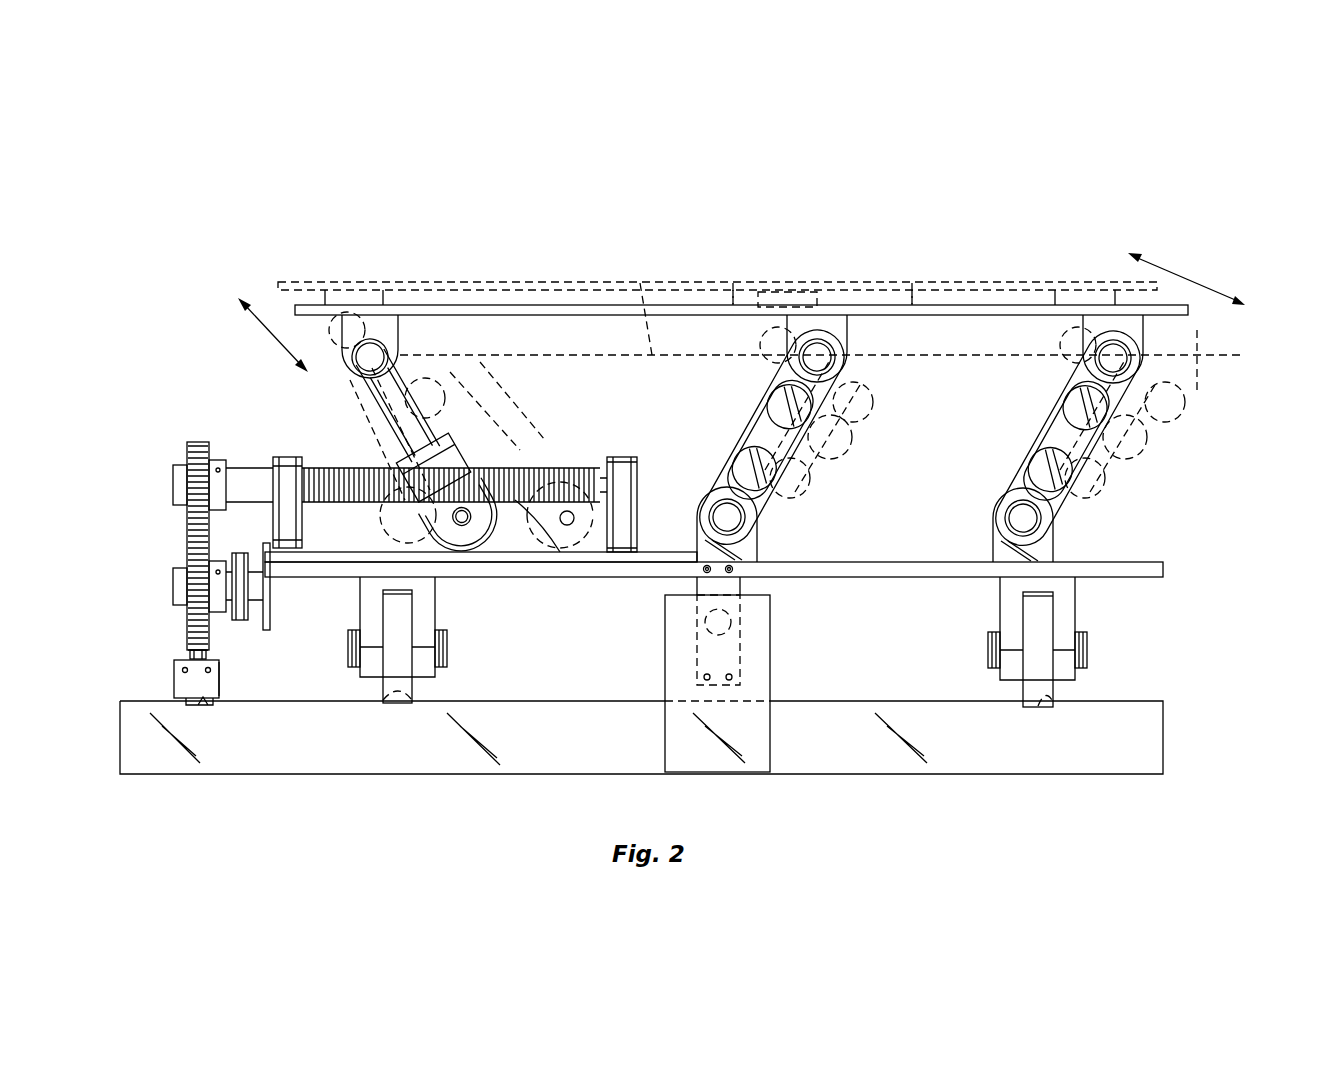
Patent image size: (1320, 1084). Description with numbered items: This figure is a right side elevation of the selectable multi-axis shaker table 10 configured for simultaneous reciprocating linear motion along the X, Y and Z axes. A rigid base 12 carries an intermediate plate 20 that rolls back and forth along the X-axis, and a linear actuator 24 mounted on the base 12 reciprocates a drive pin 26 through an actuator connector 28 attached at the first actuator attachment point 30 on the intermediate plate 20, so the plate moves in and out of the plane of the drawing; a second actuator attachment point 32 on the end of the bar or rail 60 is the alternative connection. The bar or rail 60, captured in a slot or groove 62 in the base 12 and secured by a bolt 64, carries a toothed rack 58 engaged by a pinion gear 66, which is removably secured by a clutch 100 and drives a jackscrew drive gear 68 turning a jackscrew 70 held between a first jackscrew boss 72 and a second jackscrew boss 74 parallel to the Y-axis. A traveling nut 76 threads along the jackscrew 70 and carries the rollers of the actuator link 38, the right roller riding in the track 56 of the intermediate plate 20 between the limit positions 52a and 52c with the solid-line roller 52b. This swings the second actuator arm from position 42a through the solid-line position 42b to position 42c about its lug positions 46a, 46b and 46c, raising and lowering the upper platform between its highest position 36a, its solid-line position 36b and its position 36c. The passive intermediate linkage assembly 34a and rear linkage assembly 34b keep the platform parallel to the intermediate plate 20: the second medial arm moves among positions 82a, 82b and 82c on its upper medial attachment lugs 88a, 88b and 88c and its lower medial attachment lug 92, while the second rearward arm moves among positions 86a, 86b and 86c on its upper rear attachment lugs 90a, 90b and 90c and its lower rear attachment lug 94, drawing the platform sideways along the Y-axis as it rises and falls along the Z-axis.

The shaker table 10 is at (248, 150).
The base 12 is at (1030, 752).
The intermediate plate 20 is at (1128, 577).
The linear actuator 24 is at (665, 735).
The drive pin 26 is at (700, 632).
The actuator connector 28 is at (697, 587).
The first actuator attachment point 30 is at (740, 568).
The second actuator attachment point 32 is at (178, 676).
The intermediate linkage assembly 34a is at (845, 500).
The rear linkage assembly 34b is at (1175, 486).
The upper platform highest position 36a is at (575, 270).
The upper platform solid-line position 36b is at (615, 300).
The upper platform third position 36c is at (648, 340).
The actuator link 38 is at (228, 396).
The second actuator arm first position 42a is at (350, 395).
The second actuator arm 42b is at (402, 350).
The second actuator arm third position 42c is at (470, 400).
The actuator arm lug first position 46a is at (330, 332).
The actuator arm lug 46b is at (402, 330).
The actuator arm lug third position 46c is at (497, 356).
The roller first position 52a is at (395, 525).
The roller 52b is at (475, 560).
The roller third position 52c is at (540, 560).
The track or slot 56 is at (590, 545).
The toothed rack 58 is at (187, 652).
The bar or rail 60 is at (219, 676).
The slot or groove 62 is at (205, 702).
The bolt 64 is at (209, 656).
The pinion gear 66 is at (187, 548).
The jackscrew drive gear 68 is at (187, 445).
The jackscrew 70 is at (600, 472).
The first jackscrew boss 72 is at (288, 457).
The second jackscrew boss 74 is at (637, 470).
The traveling nut 76 is at (480, 448).
The second medial arm first position 82a is at (745, 400).
The second medial arm 82b is at (745, 440).
The second medial arm third position 82c is at (832, 470).
The second rearward arm first position 86a is at (1030, 432).
The second rearward arm 86b is at (1035, 398).
The second rearward arm third position 86c is at (1090, 470).
The upper medial attachment lug first position 88a is at (745, 322).
The upper medial attachment lug 88b is at (855, 330).
The upper medial attachment lug third position 88c is at (900, 330).
The upper rear attachment lug first position 90a is at (1050, 325).
The upper rear attachment lug 90b is at (1143, 335).
The upper rear attachment lug third position 90c is at (1200, 400).
The lower medial attachment lug 92 is at (757, 548).
The lower rear attachment lug 94 is at (993, 510).
The clutch 100 is at (240, 553).